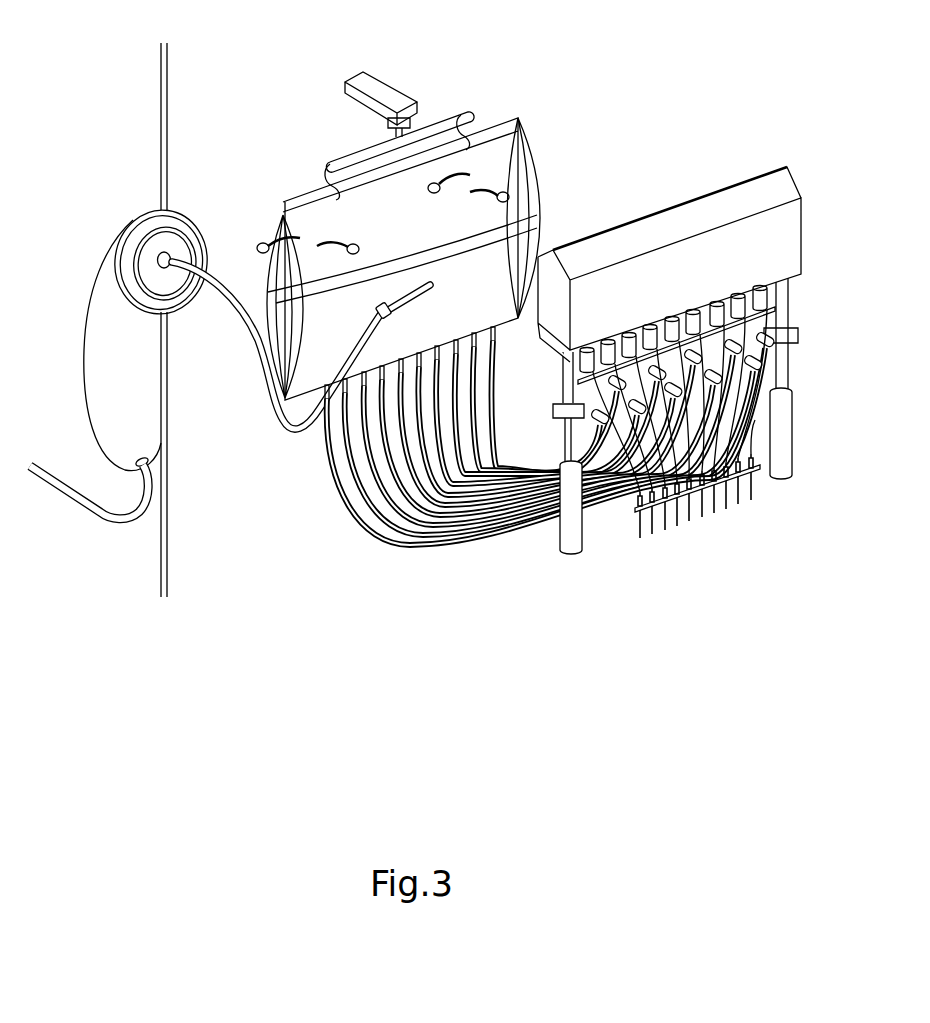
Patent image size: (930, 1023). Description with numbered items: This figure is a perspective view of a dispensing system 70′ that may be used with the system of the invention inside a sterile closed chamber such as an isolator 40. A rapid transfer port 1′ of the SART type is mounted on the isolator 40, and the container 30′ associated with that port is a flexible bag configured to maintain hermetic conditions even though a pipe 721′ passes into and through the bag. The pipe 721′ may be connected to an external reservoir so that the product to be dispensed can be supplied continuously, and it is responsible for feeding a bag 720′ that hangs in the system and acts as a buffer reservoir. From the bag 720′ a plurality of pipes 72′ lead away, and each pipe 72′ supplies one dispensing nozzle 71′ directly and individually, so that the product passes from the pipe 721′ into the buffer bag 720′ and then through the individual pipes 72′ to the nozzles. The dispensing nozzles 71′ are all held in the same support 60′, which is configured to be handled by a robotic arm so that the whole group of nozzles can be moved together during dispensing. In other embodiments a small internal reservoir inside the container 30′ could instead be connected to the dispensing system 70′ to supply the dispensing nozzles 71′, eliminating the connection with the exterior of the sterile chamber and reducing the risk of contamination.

The isolator 40 is at (158, 126).
The rapid transfer port 1′ is at (197, 220).
The container 30′ is at (97, 358).
The pipe 721′ is at (107, 518).
The bag 720′ is at (533, 237).
The dispensing system 70′ is at (390, 565).
The pipes 72′ is at (450, 547).
The support 60′ is at (757, 472).
The dispensing nozzles 71′ is at (643, 523).